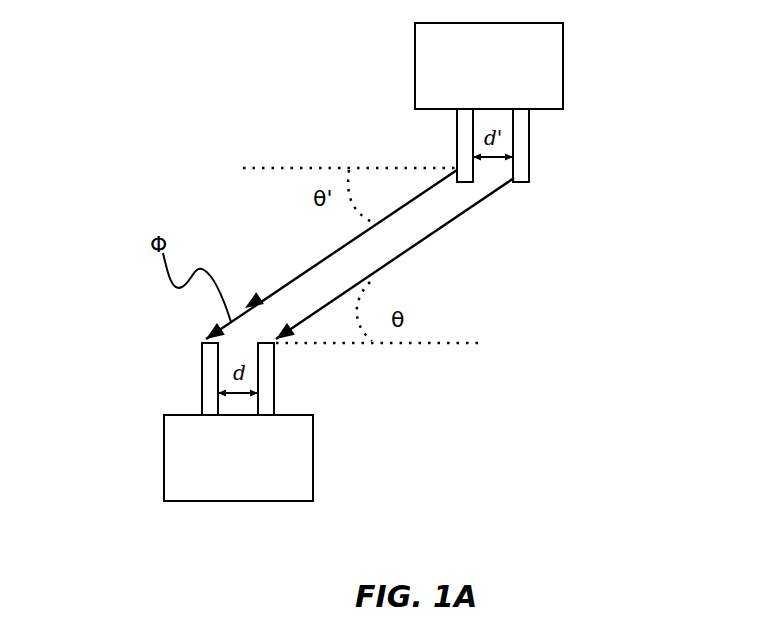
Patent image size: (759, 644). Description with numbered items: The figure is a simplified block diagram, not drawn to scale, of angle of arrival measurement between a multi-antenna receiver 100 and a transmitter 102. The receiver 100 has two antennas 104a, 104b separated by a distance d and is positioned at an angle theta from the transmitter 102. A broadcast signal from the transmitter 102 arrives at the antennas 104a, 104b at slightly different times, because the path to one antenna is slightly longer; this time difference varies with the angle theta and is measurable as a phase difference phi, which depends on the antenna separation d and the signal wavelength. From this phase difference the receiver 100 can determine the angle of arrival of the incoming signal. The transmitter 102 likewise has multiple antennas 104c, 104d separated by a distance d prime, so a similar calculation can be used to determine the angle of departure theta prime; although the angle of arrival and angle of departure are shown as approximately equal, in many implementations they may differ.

The multi-antenna receiver 100 is at (256, 486).
The transmitter 102 is at (507, 91).
The antenna 104a is at (274, 375).
The antenna 104b is at (202, 383).
The antenna 104c is at (457, 148).
The antenna 104d is at (529, 140).